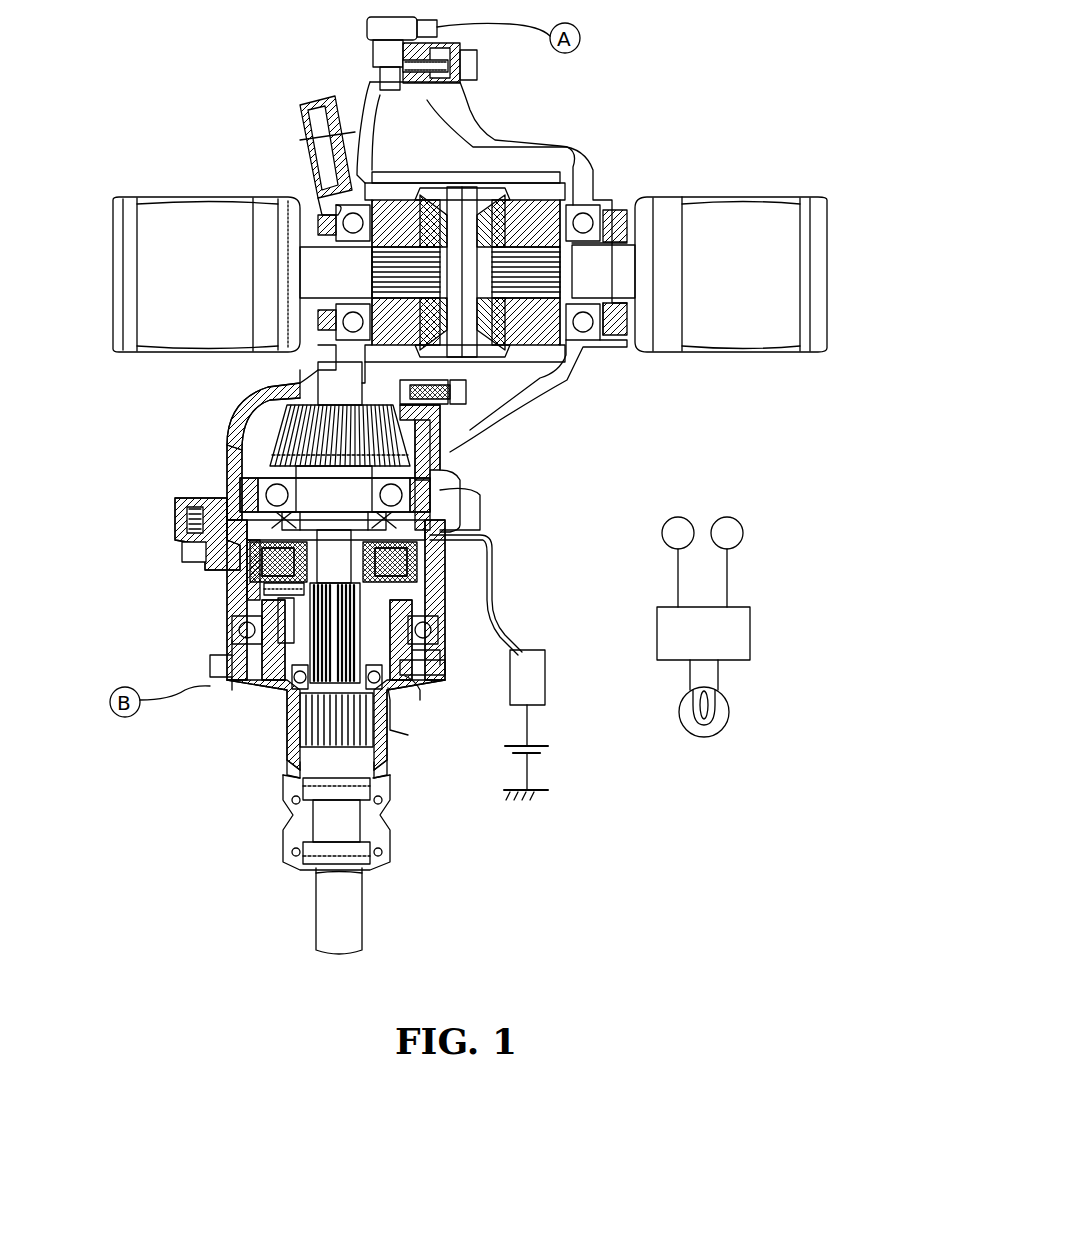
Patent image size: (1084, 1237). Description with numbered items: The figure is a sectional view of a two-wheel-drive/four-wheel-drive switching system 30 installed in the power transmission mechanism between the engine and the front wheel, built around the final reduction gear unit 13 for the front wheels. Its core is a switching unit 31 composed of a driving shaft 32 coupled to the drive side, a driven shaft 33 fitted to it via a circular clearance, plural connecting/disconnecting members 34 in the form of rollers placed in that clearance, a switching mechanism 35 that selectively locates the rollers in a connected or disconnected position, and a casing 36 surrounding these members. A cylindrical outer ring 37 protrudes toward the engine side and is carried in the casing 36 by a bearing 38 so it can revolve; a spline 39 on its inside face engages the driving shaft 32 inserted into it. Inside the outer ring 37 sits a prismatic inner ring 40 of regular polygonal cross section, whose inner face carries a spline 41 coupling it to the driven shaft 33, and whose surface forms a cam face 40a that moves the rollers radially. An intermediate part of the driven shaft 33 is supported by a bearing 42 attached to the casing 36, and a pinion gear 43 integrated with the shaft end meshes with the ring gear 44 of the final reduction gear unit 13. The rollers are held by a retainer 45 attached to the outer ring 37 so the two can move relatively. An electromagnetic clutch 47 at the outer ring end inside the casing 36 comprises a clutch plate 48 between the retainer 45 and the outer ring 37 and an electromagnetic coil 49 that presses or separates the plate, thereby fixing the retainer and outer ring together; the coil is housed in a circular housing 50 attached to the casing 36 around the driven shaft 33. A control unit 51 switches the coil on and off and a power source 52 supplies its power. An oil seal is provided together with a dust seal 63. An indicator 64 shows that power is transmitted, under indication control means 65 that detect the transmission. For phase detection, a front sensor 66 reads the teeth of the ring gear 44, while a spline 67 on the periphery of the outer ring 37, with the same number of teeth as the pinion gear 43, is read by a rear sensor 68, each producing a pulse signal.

The final reduction gear unit for the front wheel 13 is at (598, 372).
The front sensor 66 is at (370, 57).
The two-wheel-drive/four-wheel-drive switching system 30 is at (458, 518).
The pinion gear 43 is at (280, 435).
The driven shaft 33 is at (300, 496).
The ring gear 44 is at (420, 395).
The bearing 42 is at (432, 448).
The casing 36 is at (235, 566).
The housing 50 is at (240, 578).
The retainer 45 is at (410, 595).
The spline 41 is at (324, 582).
The switching mechanism 35 is at (266, 600).
The bearing 38 is at (275, 625).
The connecting/disconnecting members 34 is at (440, 627).
The inner ring 40 is at (285, 645).
The cam face 40a is at (440, 658).
The dust seal 63 is at (440, 670).
The spline 67 is at (450, 705).
The rear sensor 68 is at (210, 666).
The switching unit 31 is at (417, 690).
The spline 39 is at (300, 750).
The outer ring 37 is at (385, 750).
The driving shaft 32 is at (348, 908).
The electromagnetic clutch 47 is at (518, 595).
The clutch plate 48 is at (460, 580).
The electromagnetic coil 49 is at (460, 556).
The control unit 51 is at (524, 676).
The power source 52 is at (540, 746).
The indication control means 65 is at (750, 640).
The indicator 64 is at (730, 706).